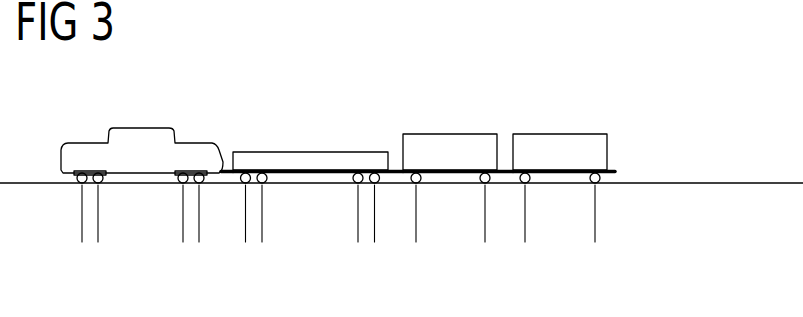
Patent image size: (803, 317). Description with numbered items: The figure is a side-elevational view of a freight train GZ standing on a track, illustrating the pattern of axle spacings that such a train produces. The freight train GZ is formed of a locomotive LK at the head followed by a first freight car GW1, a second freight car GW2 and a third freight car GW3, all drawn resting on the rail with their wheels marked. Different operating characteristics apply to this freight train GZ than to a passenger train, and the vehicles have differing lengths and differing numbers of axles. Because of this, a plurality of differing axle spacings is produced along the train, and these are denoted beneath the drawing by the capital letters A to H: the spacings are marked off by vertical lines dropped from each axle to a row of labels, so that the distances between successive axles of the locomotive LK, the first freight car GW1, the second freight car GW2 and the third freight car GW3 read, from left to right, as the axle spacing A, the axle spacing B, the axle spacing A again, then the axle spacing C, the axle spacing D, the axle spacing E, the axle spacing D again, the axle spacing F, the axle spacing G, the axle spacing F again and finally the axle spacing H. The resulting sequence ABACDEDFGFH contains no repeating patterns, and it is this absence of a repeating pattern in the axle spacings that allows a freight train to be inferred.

The freight train GZ is at (374, 79).
The locomotive LK is at (140, 128).
The first freight car GW1 is at (307, 152).
The second freight car GW2 is at (447, 133).
The third freight car GW3 is at (557, 133).
The axle spacing A is at (140, 230).
The axle spacing B is at (140, 261).
The axle spacing C is at (221, 261).
The axle spacing D is at (310, 230).
The axle spacing E is at (310, 261).
The axle spacing F is at (449, 230).
The axle spacing G is at (450, 261).
The axle spacing H is at (560, 230).